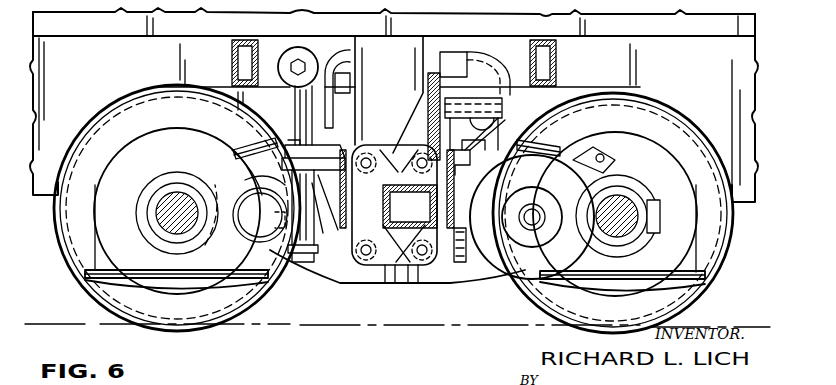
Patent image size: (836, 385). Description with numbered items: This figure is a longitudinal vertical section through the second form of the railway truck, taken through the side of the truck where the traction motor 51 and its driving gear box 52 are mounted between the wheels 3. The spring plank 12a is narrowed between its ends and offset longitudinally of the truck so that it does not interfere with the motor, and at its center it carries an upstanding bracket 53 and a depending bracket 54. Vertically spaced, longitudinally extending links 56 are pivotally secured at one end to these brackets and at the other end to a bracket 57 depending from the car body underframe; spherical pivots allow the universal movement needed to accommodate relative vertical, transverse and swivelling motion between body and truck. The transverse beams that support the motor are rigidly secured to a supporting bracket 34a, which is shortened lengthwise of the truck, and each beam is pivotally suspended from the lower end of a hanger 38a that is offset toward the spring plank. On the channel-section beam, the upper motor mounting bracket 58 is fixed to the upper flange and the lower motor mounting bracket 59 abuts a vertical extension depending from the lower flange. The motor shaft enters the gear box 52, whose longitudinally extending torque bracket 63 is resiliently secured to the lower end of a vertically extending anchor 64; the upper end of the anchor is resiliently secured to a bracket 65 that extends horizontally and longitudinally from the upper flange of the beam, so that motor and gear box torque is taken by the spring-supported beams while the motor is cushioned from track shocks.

The wheels 3 is at (74, 270).
The spring plank 12a is at (405, 224).
The supporting bracket 34a is at (337, 60).
The hanger 38a is at (500, 131).
The traction motor 51 is at (268, 140).
The driving gear box 52 is at (393, 209).
The upstanding bracket 53 is at (395, 157).
The depending bracket 54 is at (407, 263).
The links 56 is at (388, 263).
The bracket 57 is at (390, 132).
The upper motor mounting bracket 58 is at (480, 153).
The lower motor mounting bracket 59 is at (475, 264).
The torque bracket 63 is at (327, 273).
The anchor 64 is at (298, 222).
The bracket 65 is at (282, 165).